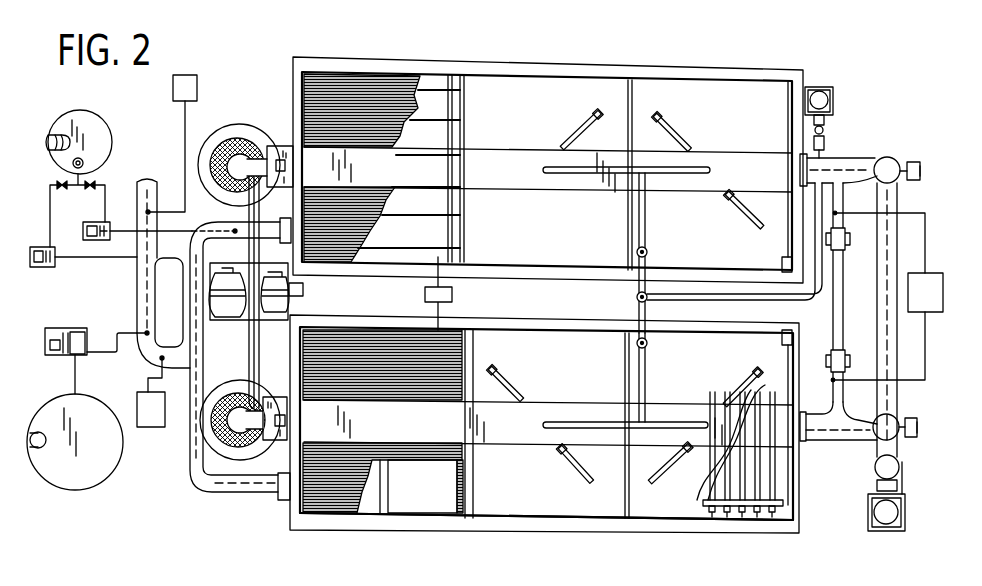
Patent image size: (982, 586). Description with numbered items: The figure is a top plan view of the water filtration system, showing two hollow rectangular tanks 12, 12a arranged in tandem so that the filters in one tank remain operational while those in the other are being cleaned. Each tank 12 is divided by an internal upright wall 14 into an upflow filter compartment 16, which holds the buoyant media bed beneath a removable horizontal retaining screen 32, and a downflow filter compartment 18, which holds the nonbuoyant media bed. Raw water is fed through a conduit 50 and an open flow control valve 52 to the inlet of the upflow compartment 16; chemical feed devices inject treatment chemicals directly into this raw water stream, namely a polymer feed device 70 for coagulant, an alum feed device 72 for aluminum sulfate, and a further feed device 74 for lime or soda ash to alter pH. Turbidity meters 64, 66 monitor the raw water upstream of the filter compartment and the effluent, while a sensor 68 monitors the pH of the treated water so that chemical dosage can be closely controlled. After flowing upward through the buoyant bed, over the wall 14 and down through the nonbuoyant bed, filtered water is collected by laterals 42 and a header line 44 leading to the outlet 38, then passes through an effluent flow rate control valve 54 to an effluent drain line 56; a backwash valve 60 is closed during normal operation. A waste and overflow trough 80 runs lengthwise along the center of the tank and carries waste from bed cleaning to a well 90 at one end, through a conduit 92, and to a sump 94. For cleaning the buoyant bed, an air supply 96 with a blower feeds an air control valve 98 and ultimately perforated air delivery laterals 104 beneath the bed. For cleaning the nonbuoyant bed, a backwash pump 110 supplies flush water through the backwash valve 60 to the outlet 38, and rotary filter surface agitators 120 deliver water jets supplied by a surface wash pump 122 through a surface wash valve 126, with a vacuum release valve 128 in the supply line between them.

The tank 12 is at (650, 527).
The tank 12a is at (764, 72).
The internal upright wall 14 is at (475, 350).
The upflow filter compartment 16 is at (440, 502).
The downflow filter compartment 18 is at (590, 508).
The screen 32 is at (330, 504).
The outlet 38 is at (804, 442).
The water collection laterals 42 is at (777, 514).
The header or main line 44 is at (744, 418).
The conduit 50 is at (146, 353).
The flow control valve 52 is at (283, 502).
The effluent flow rate control valve 54 is at (842, 354).
The effluent drain line 56 is at (842, 285).
The backwash valve 60 is at (910, 418).
The turbidity meter 64 is at (198, 85).
The turbidity meter 66 is at (930, 272).
The sensor 68 is at (453, 294).
The polymer feed device 70 is at (109, 141).
The alum feed device 72 is at (92, 489).
The chemical feed device 74 is at (148, 428).
The waste and overflow trough 80 is at (505, 436).
The well 90 is at (278, 397).
The conduit 92 is at (246, 440).
The sump 94 is at (240, 396).
The air supply 96 is at (229, 297).
The air control valve 98 is at (303, 290).
The perforated air delivery laterals 104 is at (418, 248).
The backwash pump 110 is at (897, 515).
The rotary filter surface agitators 120 is at (580, 480).
The surface wash pump 122 is at (834, 103).
The surface wash valve 126 is at (648, 345).
The vacuum release valve 128 is at (636, 297).